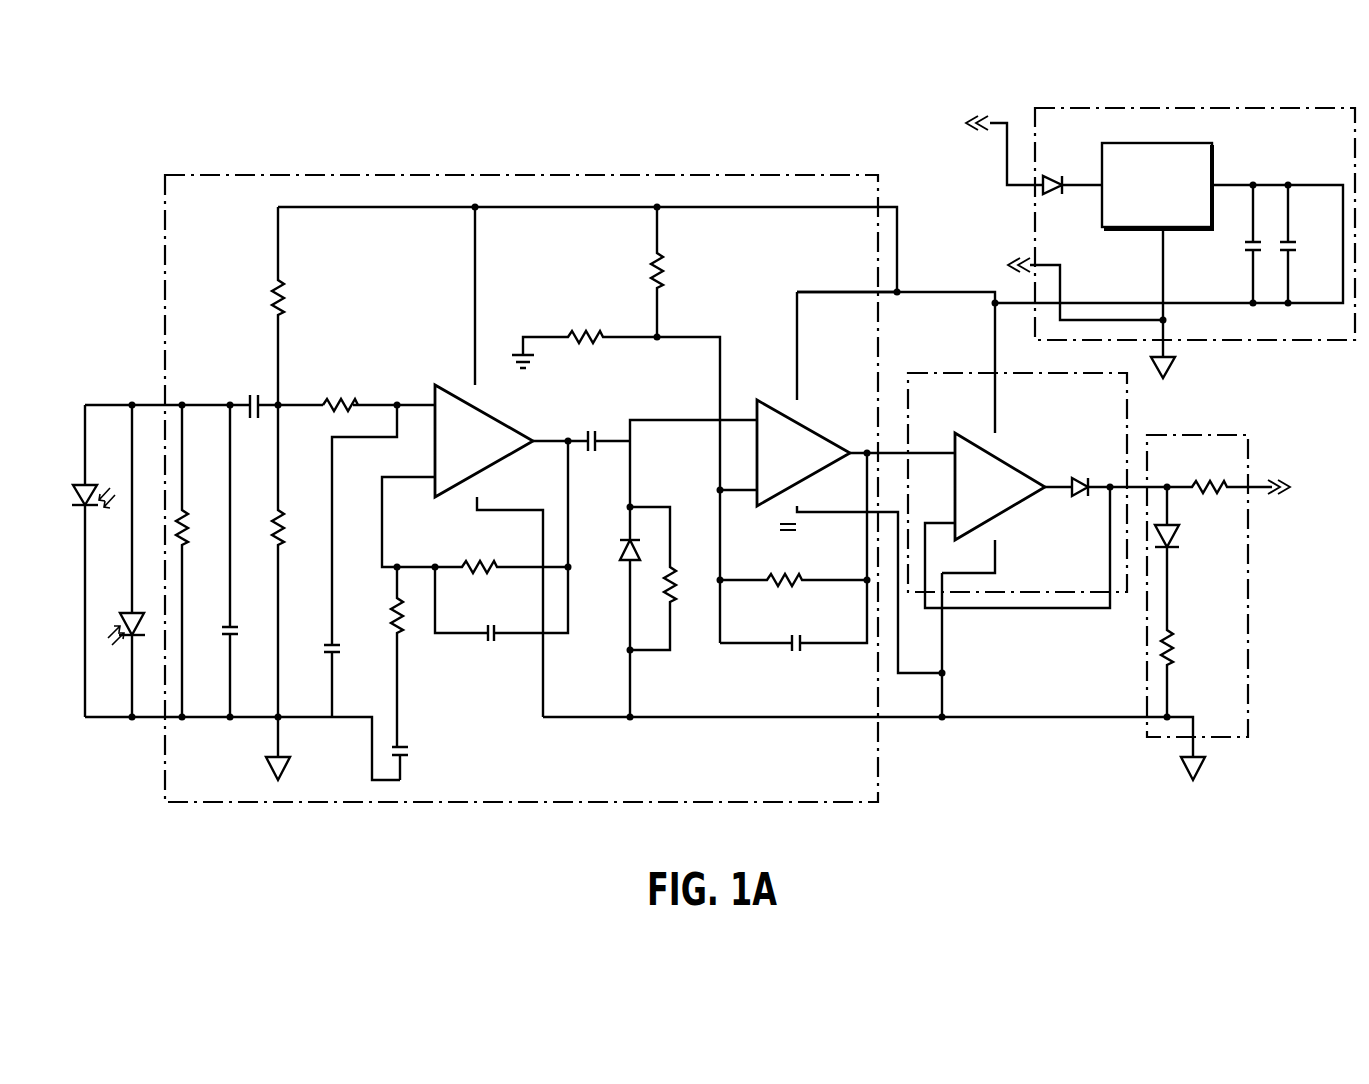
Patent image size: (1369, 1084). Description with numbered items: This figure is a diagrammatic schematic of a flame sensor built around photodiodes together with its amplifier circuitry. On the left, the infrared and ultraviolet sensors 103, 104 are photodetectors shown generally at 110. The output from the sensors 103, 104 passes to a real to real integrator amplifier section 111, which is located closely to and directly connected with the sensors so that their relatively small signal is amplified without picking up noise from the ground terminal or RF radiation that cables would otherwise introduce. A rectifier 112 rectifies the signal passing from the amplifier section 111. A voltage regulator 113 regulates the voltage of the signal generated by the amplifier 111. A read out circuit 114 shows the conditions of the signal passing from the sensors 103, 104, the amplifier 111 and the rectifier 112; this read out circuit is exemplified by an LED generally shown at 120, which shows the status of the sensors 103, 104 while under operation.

The infrared sensor 103 is at (92, 512).
The ultraviolet sensor 104 is at (126, 611).
The photodetectors 110 is at (105, 308).
The real to real integrator amplifier section 111 is at (492, 175).
The rectifier 112 is at (976, 372).
The voltage regulator 113 is at (1270, 343).
The read out circuit 114 is at (1210, 434).
The LED 120 is at (1208, 598).